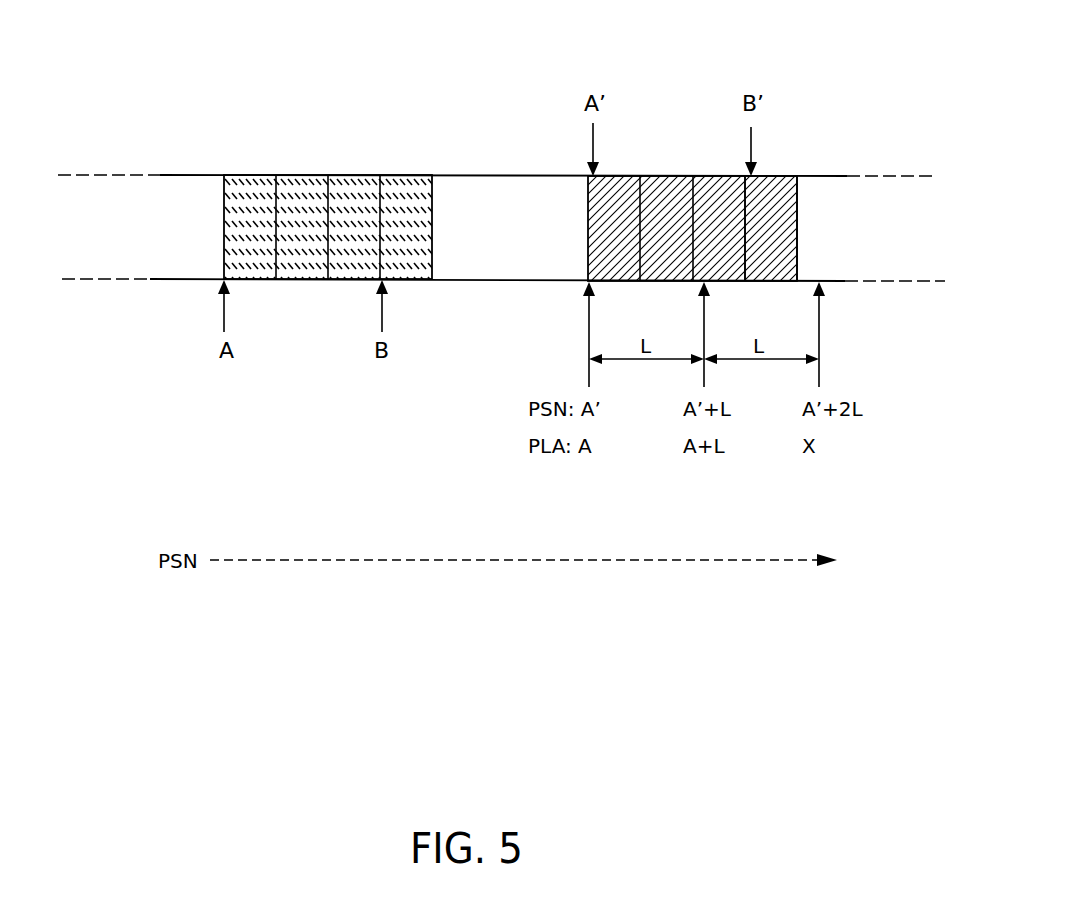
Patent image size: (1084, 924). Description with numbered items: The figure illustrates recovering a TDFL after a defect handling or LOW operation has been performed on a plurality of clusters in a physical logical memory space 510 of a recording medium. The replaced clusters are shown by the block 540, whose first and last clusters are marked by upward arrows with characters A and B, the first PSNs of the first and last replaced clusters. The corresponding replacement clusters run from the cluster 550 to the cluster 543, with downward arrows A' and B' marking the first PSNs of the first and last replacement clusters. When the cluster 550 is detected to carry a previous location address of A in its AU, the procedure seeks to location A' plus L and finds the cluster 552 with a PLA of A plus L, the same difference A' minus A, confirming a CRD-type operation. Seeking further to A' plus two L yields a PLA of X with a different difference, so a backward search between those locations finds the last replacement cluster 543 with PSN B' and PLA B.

The physical logical memory space 510 is at (108, 175).
The original cluster 540 is at (248, 175).
The first replacement cluster 550 is at (755, 153).
The replacement cluster at location A'+L 552 is at (704, 176).
The last replacement cluster 543 is at (776, 176).